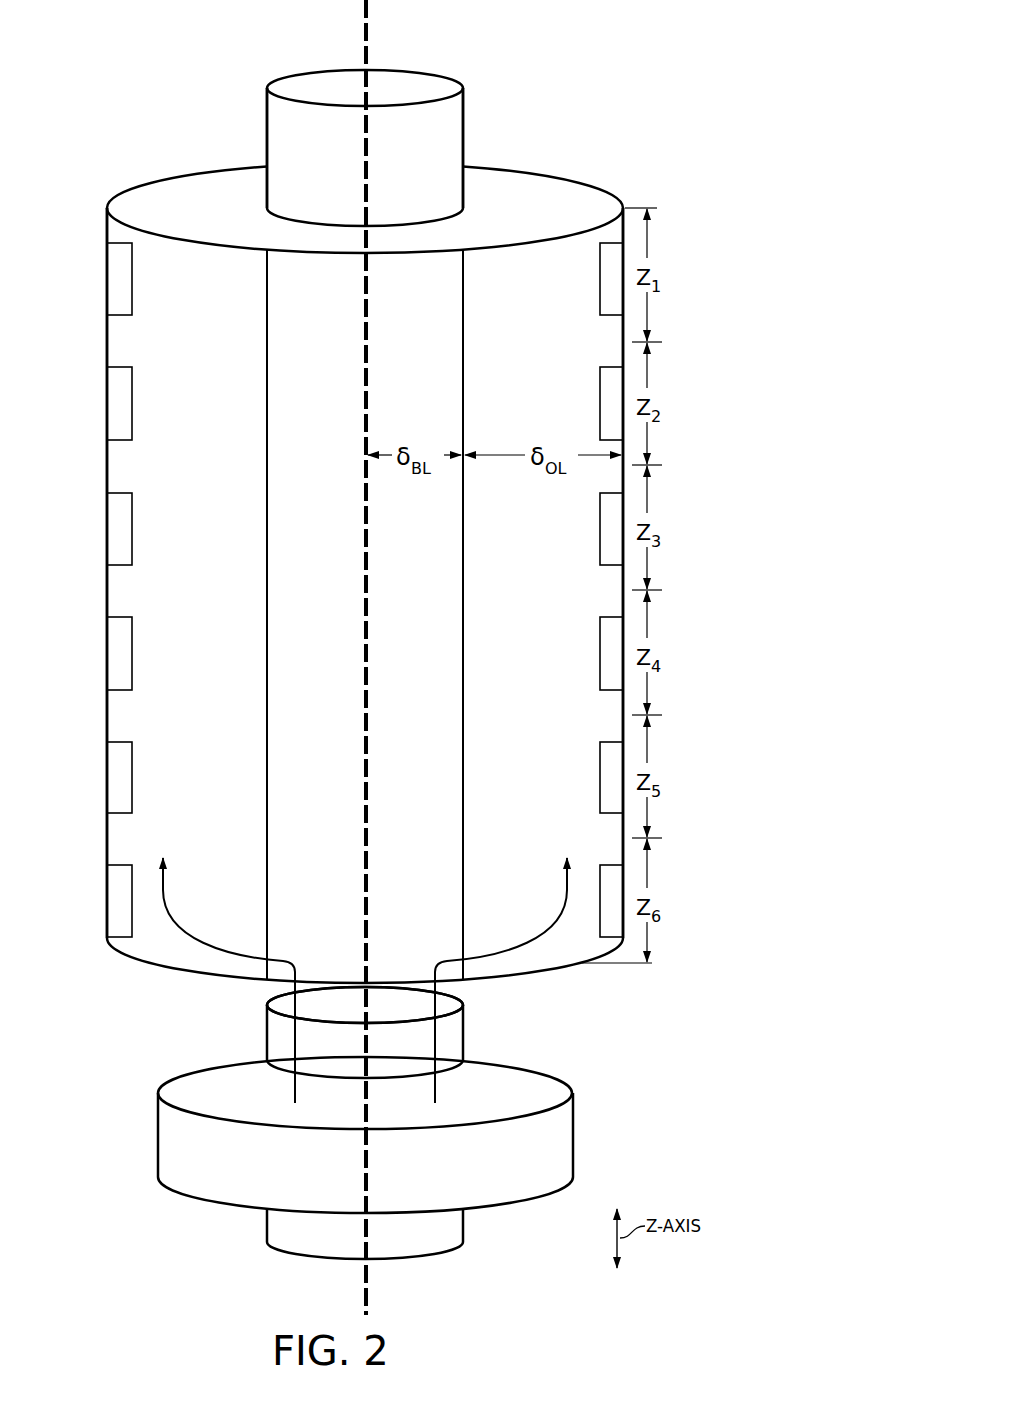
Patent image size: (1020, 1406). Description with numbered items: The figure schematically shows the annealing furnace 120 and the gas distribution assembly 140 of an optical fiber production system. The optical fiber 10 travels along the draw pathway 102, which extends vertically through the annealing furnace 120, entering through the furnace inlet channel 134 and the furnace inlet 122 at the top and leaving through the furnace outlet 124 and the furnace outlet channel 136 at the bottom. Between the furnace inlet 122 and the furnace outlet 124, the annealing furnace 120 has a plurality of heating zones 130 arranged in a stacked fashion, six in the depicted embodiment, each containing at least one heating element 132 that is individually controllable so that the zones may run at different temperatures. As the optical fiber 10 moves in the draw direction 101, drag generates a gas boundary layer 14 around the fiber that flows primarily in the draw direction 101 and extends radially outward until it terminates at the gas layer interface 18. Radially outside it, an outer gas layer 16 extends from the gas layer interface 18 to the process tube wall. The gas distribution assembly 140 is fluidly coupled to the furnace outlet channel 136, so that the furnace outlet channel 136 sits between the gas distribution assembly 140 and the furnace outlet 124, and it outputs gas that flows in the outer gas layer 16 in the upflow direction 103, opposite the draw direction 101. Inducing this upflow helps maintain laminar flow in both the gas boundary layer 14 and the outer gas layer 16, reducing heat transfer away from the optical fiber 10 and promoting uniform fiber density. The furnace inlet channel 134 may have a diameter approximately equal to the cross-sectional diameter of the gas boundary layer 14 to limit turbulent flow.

The optical fiber 10 is at (368, 20).
The draw pathway 102 is at (365, 52).
The furnace inlet channel 134 is at (466, 118).
The furnace inlet 122 is at (365, 152).
The annealing furnace 120 is at (417, 527).
The heating zones 130 is at (437, 600).
The outer gas layer 16 is at (365, 569).
The gas boundary layer 14 is at (364, 591).
The draw direction 101 is at (313, 399).
The heating element 132 is at (600, 308).
The gas layer interface 18 is at (266, 410).
The upflow direction 103 is at (166, 890).
The furnace outlet 124 is at (310, 1012).
The furnace outlet channel 136 is at (466, 1031).
The gas distribution assembly 140 is at (428, 1158).